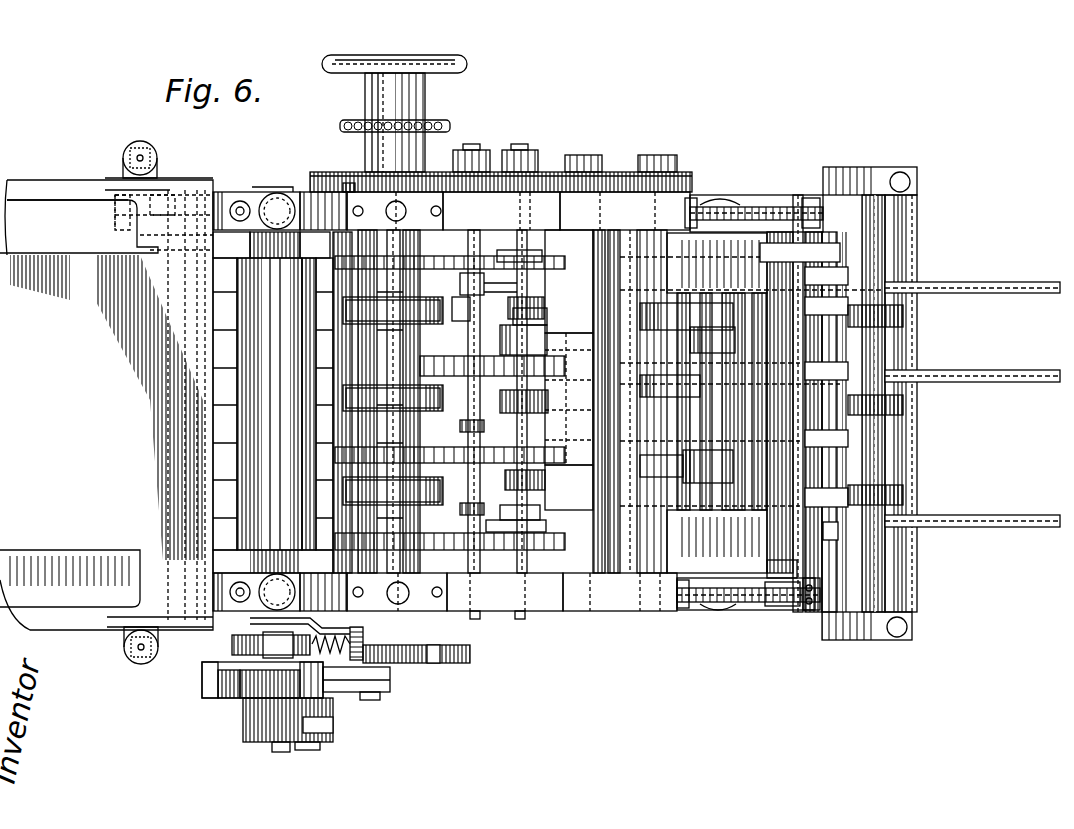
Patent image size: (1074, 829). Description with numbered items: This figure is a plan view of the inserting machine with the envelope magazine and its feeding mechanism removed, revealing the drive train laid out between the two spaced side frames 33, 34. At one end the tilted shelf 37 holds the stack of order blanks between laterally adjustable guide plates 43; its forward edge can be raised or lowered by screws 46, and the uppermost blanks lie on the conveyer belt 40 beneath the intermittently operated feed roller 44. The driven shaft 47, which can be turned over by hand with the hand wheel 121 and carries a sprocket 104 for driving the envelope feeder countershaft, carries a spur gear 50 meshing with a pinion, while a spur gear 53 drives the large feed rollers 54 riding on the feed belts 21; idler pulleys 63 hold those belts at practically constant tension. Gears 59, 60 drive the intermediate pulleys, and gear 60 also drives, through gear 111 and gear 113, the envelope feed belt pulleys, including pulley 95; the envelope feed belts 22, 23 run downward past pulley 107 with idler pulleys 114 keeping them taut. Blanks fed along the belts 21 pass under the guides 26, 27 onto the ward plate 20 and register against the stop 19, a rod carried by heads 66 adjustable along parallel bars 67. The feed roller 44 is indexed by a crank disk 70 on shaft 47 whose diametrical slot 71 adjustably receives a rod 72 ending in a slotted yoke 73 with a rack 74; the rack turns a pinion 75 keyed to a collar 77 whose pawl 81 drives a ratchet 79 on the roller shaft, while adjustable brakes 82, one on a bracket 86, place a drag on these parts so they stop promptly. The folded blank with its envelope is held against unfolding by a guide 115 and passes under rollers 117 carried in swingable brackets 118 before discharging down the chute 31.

The stop 19 is at (808, 570).
The ward plate 20 is at (753, 568).
The feed belt 21 is at (486, 456).
The feed belt 22 is at (588, 345).
The feed belt 23 is at (670, 482).
The guide 26 is at (467, 312).
The guide 27 is at (708, 302).
The chute 31 is at (957, 527).
The side frame 33 is at (609, 605).
The side frame 34 is at (305, 205).
The shelf 37 is at (106, 404).
The conveyer belt 40 is at (230, 527).
The guide plate 43 is at (93, 256).
The feed roller 44 is at (272, 430).
The screw 46 is at (142, 664).
The driven shaft 47 is at (383, 105).
The spur gear 50 is at (327, 176).
The spur gear 53 is at (349, 185).
The feed roller 54 is at (356, 310).
The gear 59 is at (478, 164).
The gear 60 is at (523, 166).
The idler pulley 63 is at (520, 543).
The head 66 is at (808, 612).
The parallel bar 67 is at (770, 600).
The crank disk 70 is at (471, 659).
The diametrical slot 71 is at (438, 650).
The rod 72 is at (385, 684).
The slotted yoke 73 is at (210, 670).
The rack 74 is at (232, 680).
The pinion 75 is at (270, 690).
The collar 77 is at (256, 704).
The ratchet 79 is at (262, 734).
The pawl 81 is at (335, 724).
The brake 82 is at (232, 646).
The bracket 86 is at (318, 616).
The pulley 95 is at (569, 370).
The sprocket 104 is at (450, 126).
The pulley 107 is at (672, 492).
The gear 111 is at (680, 168).
The gear 113 is at (563, 170).
The idler pulley 114 is at (736, 336).
The guide 115 is at (845, 556).
The roller 117 is at (905, 489).
The bracket 118 is at (862, 633).
The hand wheel 121 is at (467, 65).